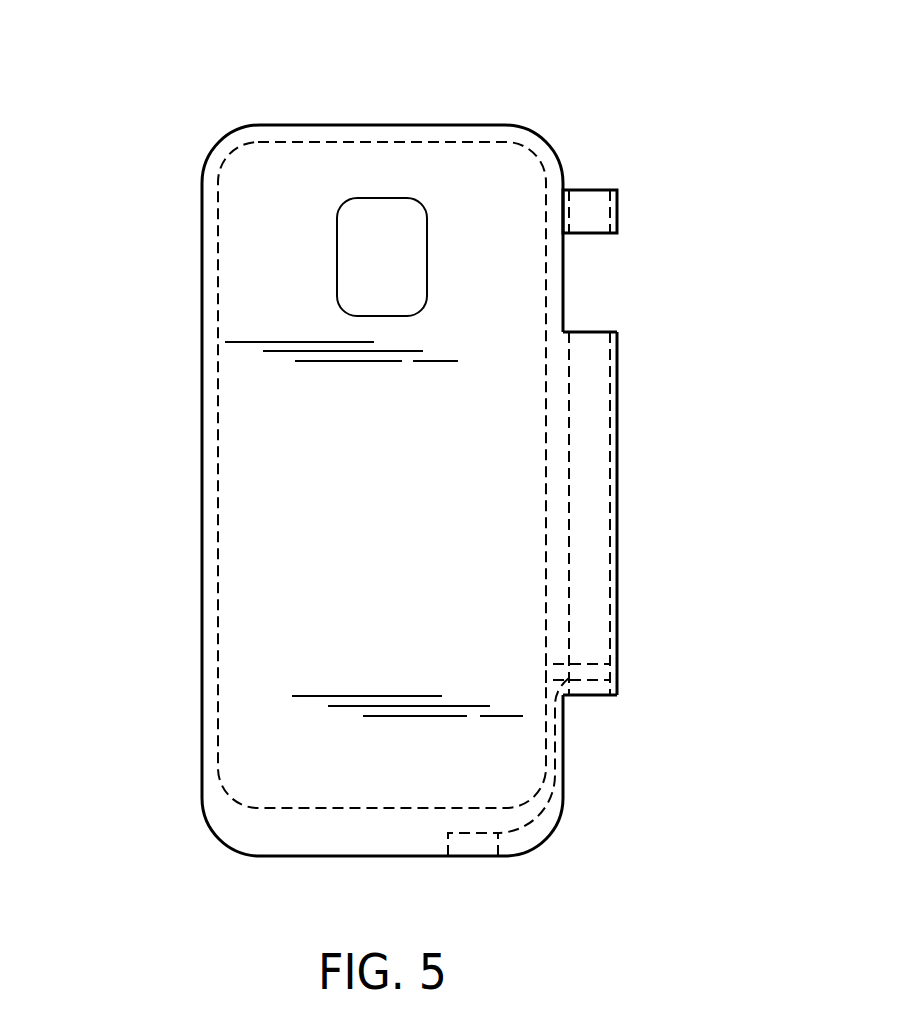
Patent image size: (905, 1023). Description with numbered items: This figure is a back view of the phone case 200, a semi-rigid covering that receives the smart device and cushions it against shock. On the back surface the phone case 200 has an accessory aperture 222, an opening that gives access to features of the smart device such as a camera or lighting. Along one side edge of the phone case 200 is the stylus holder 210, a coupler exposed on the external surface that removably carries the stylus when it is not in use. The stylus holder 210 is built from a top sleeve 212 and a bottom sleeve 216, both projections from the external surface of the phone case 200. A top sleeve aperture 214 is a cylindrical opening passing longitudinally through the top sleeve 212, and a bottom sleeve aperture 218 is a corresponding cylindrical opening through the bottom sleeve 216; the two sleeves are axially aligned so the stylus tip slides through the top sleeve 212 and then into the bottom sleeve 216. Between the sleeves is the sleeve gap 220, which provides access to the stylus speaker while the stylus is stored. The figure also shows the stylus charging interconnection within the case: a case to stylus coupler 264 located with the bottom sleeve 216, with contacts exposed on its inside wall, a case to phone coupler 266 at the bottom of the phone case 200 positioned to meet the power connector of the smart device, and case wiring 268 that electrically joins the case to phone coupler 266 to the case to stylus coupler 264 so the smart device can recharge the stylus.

The phone case 200 is at (208, 823).
The stylus holder 210 is at (717, 187).
The top sleeve 212 is at (588, 190).
The top sleeve aperture 214 is at (610, 213).
The bottom sleeve 216 is at (617, 697).
The bottom sleeve aperture 218 is at (610, 487).
The sleeve gap 220 is at (627, 237).
The accessory aperture 222 is at (418, 198).
The case to stylus coupler 264 is at (550, 668).
The case to phone coupler 266 is at (500, 835).
The case wiring 268 is at (555, 790).